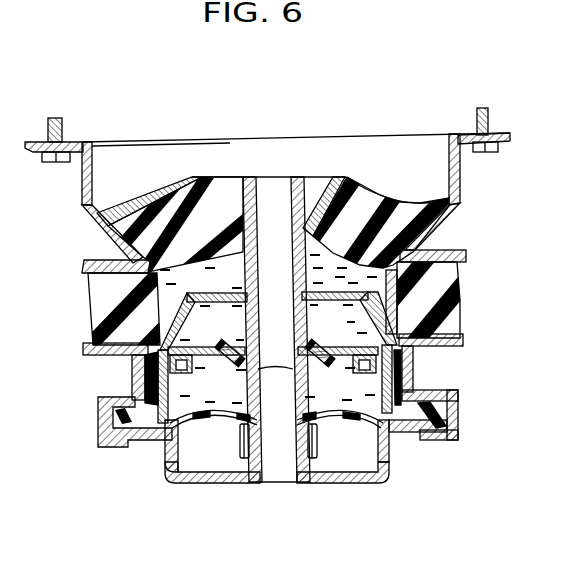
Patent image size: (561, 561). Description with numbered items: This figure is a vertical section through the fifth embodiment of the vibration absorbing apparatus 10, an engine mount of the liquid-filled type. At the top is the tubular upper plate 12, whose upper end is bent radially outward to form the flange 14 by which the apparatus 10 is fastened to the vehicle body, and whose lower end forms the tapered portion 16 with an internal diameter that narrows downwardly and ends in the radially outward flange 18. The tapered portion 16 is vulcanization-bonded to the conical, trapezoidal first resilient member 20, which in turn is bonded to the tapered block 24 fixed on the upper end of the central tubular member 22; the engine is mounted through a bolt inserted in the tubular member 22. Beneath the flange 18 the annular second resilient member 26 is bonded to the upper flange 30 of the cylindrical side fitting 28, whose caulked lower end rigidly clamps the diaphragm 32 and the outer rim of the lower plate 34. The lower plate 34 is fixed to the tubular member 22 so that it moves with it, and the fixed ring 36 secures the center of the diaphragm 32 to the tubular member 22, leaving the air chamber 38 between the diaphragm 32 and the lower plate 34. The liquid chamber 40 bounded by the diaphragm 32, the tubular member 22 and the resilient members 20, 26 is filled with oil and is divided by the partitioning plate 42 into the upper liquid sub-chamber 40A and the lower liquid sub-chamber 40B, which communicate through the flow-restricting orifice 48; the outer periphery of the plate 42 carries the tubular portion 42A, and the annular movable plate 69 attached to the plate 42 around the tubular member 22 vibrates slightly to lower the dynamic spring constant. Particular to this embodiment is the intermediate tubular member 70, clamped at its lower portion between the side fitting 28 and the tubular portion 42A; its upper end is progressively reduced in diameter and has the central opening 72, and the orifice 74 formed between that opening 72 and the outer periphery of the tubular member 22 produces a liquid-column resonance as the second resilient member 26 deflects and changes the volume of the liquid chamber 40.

The vibration absorbing apparatus 10 is at (428, 126).
The tubular upper plate 12 is at (461, 182).
The flange 14 is at (500, 134).
The tapered portion 16 is at (438, 226).
The flange 18 is at (456, 250).
The first resilient member 20 is at (367, 203).
The tubular member 22 is at (297, 177).
The tapered block 24 is at (346, 178).
The second resilient member 26 is at (430, 303).
The side fitting 28 is at (414, 369).
The upper flange 30 is at (464, 341).
The diaphragm 32 is at (167, 452).
The lower plate 34 is at (343, 484).
The fixed ring 36 is at (237, 483).
The air chamber 38 is at (360, 450).
The liquid chamber 40 is at (157, 285).
The upper liquid sub-chamber 40A is at (237, 333).
The lower liquid sub-chamber 40B is at (238, 396).
The partitioning plate 42 is at (345, 339).
The tubular portion 42A is at (440, 392).
The orifice 48 is at (132, 383).
The movable plate 69 is at (340, 352).
The intermediate tubular member 70 is at (463, 265).
The central opening 72 is at (268, 276).
The orifice 74 is at (227, 294).